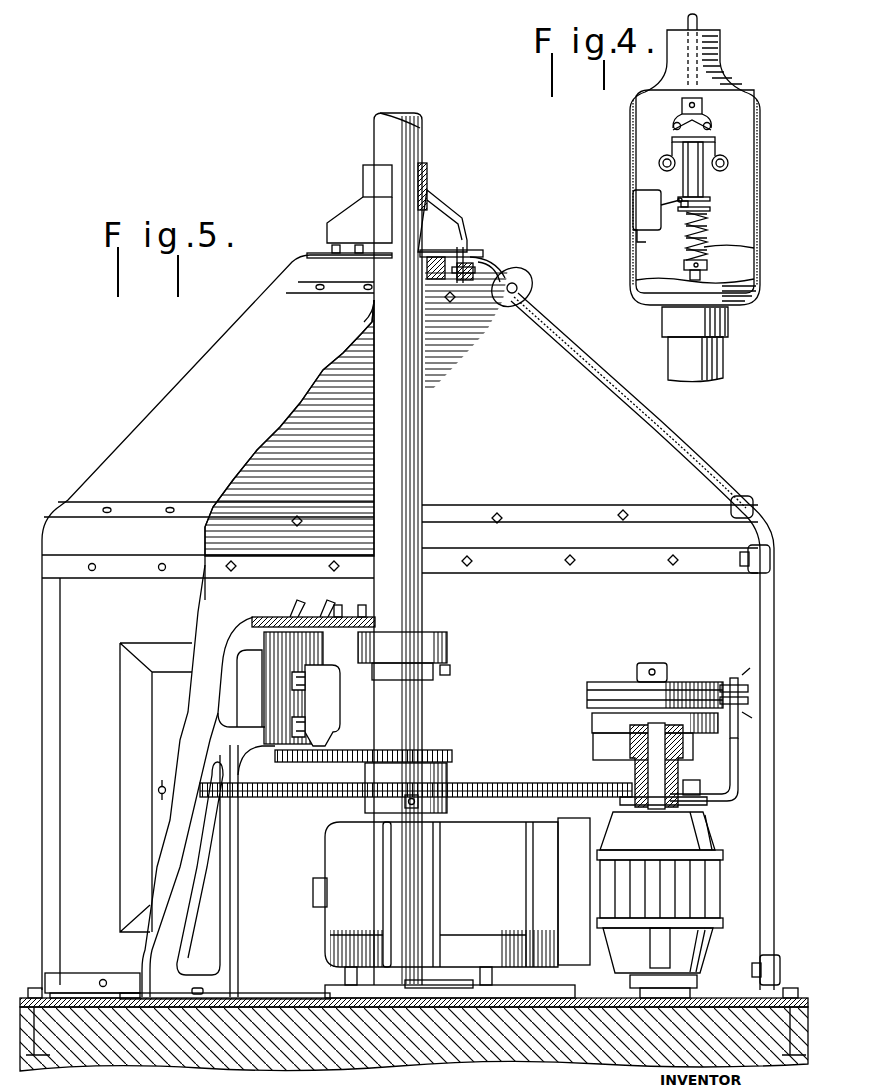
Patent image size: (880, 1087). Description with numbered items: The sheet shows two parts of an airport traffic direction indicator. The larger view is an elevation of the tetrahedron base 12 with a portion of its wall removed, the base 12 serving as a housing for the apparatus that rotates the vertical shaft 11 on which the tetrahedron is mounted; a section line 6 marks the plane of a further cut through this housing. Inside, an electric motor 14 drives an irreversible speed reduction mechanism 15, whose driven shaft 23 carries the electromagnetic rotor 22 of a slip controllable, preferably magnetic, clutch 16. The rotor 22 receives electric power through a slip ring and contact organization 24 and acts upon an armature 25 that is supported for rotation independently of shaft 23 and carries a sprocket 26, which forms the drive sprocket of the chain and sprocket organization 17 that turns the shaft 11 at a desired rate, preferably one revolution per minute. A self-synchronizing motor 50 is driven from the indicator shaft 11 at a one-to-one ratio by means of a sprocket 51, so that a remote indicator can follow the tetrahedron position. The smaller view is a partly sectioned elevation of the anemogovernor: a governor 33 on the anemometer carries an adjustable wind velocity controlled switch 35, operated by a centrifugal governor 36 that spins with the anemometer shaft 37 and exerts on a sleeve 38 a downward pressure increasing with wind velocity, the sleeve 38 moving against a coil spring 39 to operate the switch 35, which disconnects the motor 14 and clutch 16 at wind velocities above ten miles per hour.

In FIG. 5, the section line 6- 6 is at (120, 600).
In FIG. 5, the shaft 11 is at (413, 150).
In FIG. 5, the base 12 is at (148, 413).
In FIG. 5, the electric motor 14 is at (338, 843).
In FIG. 5, the speed reduction mechanism 15 is at (703, 846).
In FIG. 5, the slip controllable clutch 16 is at (588, 722).
In FIG. 5, the chain and sprocket organization 17 is at (477, 784).
In FIG. 5, the electromagnetic rotor 22 is at (680, 688).
In FIG. 5, the driven shaft 23 is at (652, 763).
In FIG. 5, the slip ring and contact organization 24 is at (727, 676).
In FIG. 5, the armature 25 is at (593, 740).
In FIG. 5, the sprocket 26 is at (689, 789).
In FIG. 4, the governor 33 is at (626, 143).
In FIG. 4, the wind velocity controlled switch 35 is at (645, 212).
In FIG. 4, the centrifugal governor 36 is at (720, 136).
In FIG. 4, the anemometer shaft 37 is at (700, 20).
In FIG. 4, the sleeve 38 is at (708, 186).
In FIG. 4, the coil spring 39 is at (757, 252).
In FIG. 5, the self-synchronizing motor 50 is at (342, 716).
In FIG. 5, the sprocket 51 is at (458, 746).